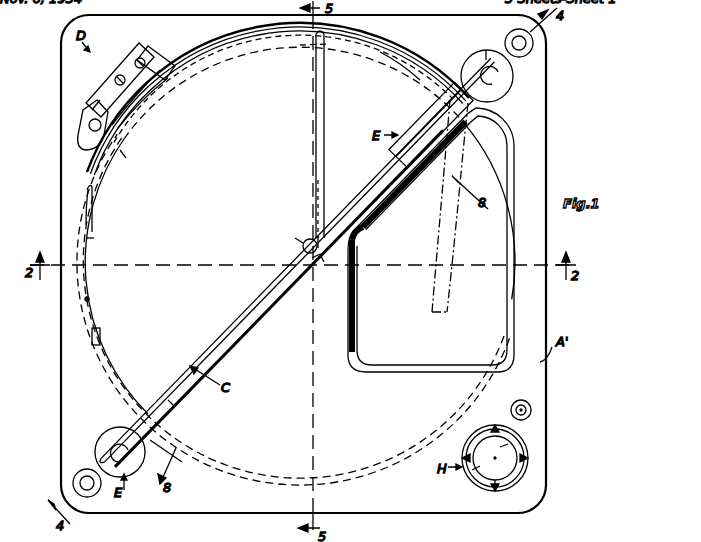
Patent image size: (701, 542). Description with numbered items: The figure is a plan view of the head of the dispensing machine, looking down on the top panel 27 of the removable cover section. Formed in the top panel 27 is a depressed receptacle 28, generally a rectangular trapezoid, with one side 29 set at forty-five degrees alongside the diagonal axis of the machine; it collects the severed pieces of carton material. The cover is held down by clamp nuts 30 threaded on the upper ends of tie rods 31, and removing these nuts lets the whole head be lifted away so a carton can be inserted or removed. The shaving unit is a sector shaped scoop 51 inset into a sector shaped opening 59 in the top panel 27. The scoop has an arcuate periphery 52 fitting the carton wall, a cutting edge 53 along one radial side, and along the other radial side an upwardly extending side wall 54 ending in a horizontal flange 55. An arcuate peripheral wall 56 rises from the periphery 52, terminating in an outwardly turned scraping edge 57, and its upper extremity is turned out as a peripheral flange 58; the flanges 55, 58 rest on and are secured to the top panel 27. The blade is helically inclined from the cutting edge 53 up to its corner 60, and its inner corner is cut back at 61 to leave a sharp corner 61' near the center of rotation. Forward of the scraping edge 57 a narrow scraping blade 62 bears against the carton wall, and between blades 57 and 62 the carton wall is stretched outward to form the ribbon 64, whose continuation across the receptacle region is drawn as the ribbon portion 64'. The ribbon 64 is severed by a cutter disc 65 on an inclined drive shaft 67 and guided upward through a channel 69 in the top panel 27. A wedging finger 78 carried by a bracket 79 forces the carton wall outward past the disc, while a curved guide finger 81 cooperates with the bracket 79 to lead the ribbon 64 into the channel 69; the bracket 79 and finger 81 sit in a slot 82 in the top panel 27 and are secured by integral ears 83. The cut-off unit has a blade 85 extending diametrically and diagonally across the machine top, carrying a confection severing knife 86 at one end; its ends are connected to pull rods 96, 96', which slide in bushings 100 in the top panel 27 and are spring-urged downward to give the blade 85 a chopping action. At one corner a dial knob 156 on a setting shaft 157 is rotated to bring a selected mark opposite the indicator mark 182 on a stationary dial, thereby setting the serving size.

The top panel 27 is at (288, 445).
The receptacle 28 is at (408, 370).
The side of receptacle 29 is at (378, 208).
The clamp nuts 30 is at (534, 52).
The tie rods 31 is at (514, 38).
The sector shaped scoop 51 is at (214, 223).
The arcuate periphery 52 is at (90, 300).
The cutting edge 53 is at (266, 326).
The side wall 54 is at (316, 168).
The horizontal flange 55 is at (316, 186).
The arcuate peripheral wall 56 is at (100, 194).
The scraping edge 57 is at (90, 240).
The peripheral flange 58 is at (98, 210).
The sector shaped opening 59 is at (320, 234).
The corner of blade 60 is at (308, 48).
The cut back portion 61 is at (296, 241).
The sharp corner 61' is at (327, 275).
The scraping blade 62 is at (100, 338).
The ribbon 64 is at (269, 202).
The hood extension 64' is at (460, 206).
The cutter disc 65 is at (90, 150).
The drive shaft 67 is at (88, 133).
The channel 69 is at (384, 50).
The wedging finger 78 is at (124, 152).
The bracket 79 is at (150, 100).
The guide finger 81 is at (94, 104).
The slot 82 is at (104, 86).
The integral ears 83 is at (158, 46).
The blade 85 is at (222, 356).
The confection severing knife 86 is at (170, 418).
The pull rod 96 is at (116, 448).
The pull rod 96' is at (496, 78).
The bushings 100 is at (486, 50).
The dial knob 156 is at (478, 472).
The setting shaft 157 is at (528, 443).
The indicator mark 182 is at (496, 488).